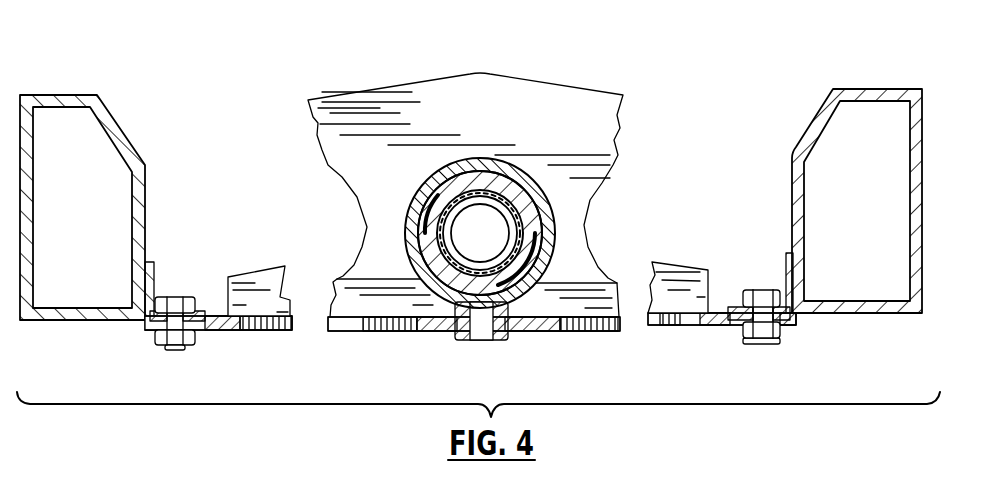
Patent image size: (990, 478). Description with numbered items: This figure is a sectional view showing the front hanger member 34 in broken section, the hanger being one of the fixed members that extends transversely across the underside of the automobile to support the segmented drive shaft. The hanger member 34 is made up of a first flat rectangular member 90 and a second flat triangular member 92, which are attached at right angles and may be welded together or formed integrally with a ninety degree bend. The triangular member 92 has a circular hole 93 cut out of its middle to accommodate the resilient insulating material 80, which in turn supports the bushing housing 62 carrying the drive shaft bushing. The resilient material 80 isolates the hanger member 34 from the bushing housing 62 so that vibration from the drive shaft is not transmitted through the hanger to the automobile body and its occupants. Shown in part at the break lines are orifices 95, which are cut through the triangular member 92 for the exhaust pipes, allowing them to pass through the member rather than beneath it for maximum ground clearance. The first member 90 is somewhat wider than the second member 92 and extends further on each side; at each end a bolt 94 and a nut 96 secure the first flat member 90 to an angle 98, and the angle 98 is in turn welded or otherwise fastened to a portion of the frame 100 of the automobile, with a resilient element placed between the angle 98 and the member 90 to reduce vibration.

The front hanger member 34 is at (536, 81).
The bushing housing 62 is at (438, 178).
The resilient insulating material 80 is at (484, 168).
The first flat rectangular member 90 is at (687, 323).
The second flat triangular member 92 is at (610, 95).
The circular hole 93 is at (529, 172).
The bolt 94 is at (762, 290).
The orifices 95 is at (361, 219).
The nut 96 is at (750, 335).
The angle 98 is at (788, 255).
The frame 100 is at (922, 248).